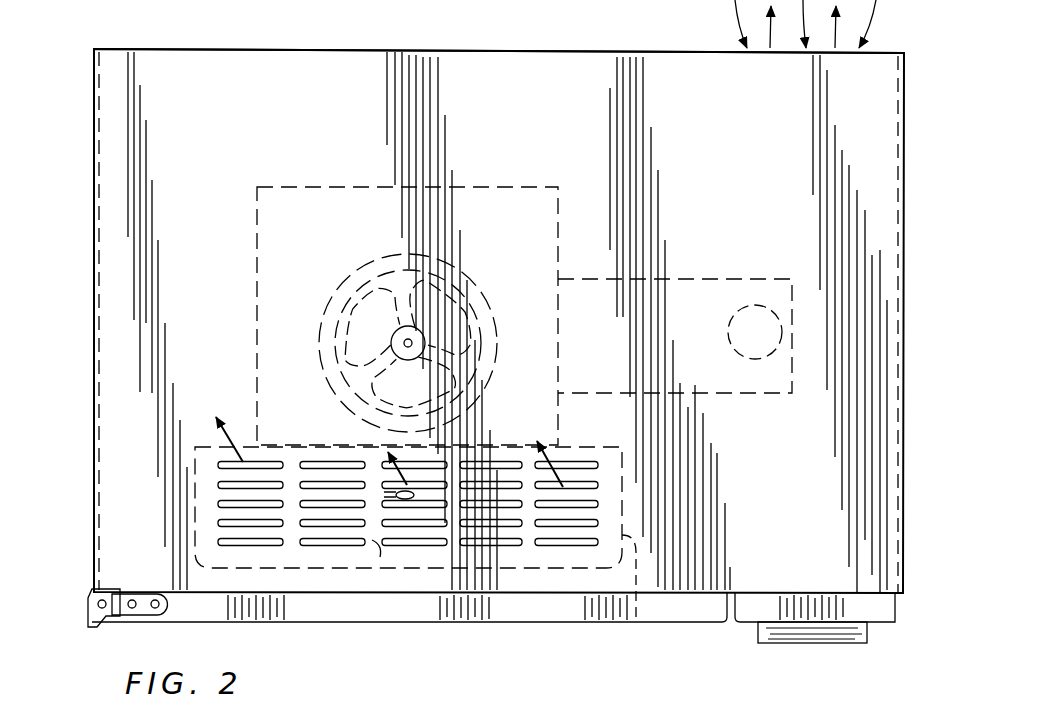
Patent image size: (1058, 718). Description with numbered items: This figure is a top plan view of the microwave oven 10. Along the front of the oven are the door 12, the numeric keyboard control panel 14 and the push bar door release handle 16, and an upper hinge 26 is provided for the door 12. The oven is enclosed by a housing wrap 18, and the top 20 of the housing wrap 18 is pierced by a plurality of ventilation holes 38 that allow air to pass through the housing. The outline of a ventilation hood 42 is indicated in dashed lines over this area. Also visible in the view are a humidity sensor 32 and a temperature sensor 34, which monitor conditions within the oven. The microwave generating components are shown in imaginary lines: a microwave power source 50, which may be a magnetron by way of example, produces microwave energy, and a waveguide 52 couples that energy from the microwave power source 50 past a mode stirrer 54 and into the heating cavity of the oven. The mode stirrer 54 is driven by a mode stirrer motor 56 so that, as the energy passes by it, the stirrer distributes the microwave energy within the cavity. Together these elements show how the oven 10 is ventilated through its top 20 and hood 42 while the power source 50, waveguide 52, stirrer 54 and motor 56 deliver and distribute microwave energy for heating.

The microwave oven 10 is at (919, 100).
The door 12 is at (555, 607).
The numeric keyboard control panel 14 is at (757, 607).
The push bar door release handle 16 is at (860, 630).
The housing wrap 18 is at (436, 46).
The top 20 is at (792, 183).
The upper hinge 26 is at (91, 604).
The humidity sensor 32 is at (367, 498).
The temperature sensor 34 is at (418, 498).
The ventilation holes 38 is at (380, 557).
The ventilation hood 42 is at (629, 594).
The microwave power source 50 is at (672, 278).
The waveguide 52 is at (729, 321).
The mode stirrer 54 is at (420, 335).
The mode stirrer motor 56 is at (424, 340).